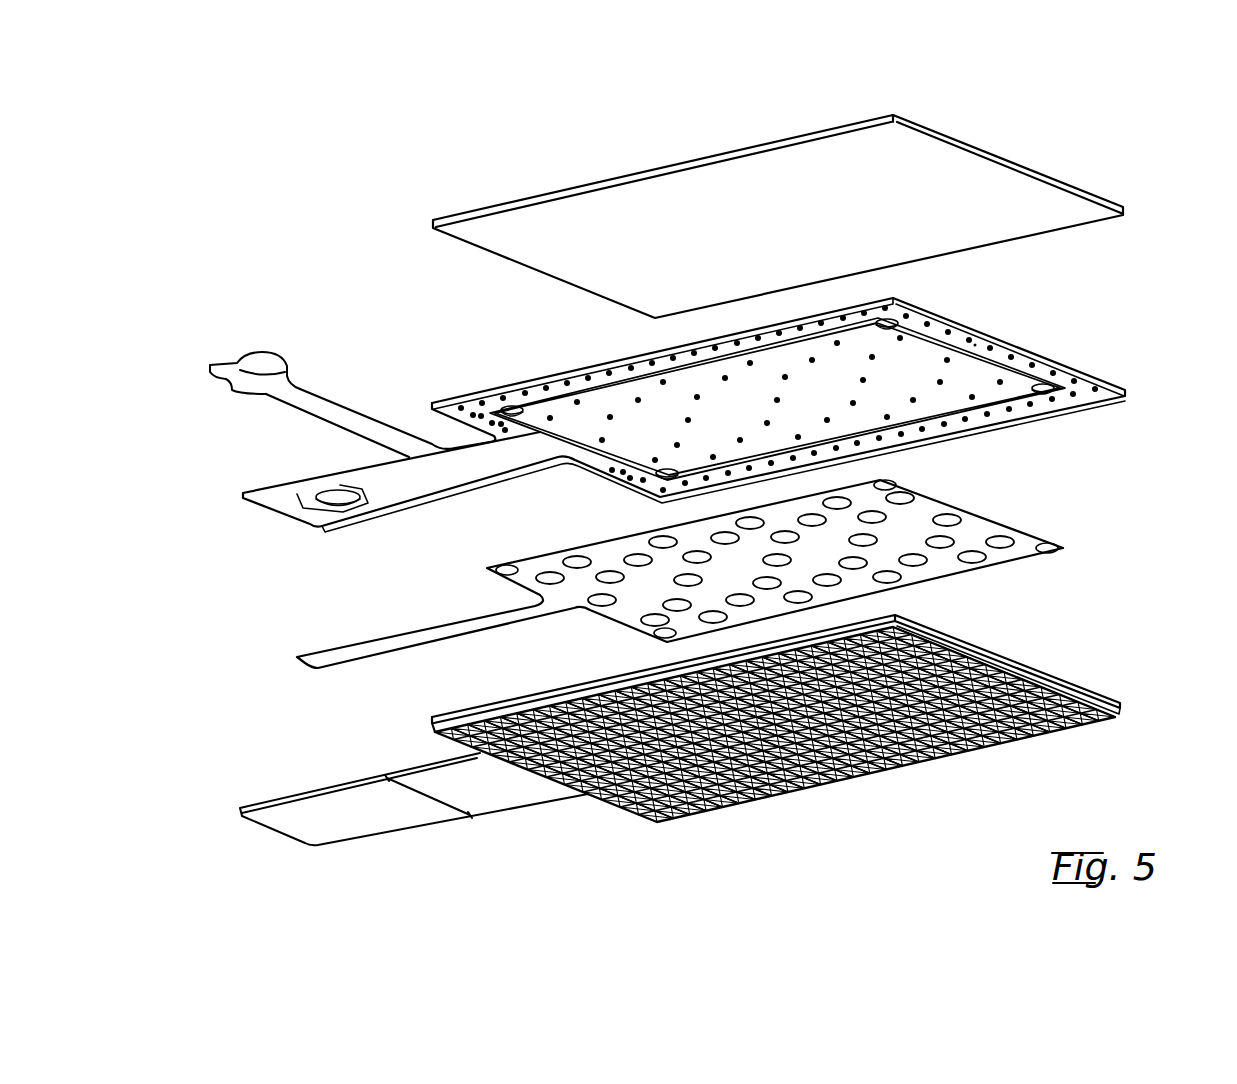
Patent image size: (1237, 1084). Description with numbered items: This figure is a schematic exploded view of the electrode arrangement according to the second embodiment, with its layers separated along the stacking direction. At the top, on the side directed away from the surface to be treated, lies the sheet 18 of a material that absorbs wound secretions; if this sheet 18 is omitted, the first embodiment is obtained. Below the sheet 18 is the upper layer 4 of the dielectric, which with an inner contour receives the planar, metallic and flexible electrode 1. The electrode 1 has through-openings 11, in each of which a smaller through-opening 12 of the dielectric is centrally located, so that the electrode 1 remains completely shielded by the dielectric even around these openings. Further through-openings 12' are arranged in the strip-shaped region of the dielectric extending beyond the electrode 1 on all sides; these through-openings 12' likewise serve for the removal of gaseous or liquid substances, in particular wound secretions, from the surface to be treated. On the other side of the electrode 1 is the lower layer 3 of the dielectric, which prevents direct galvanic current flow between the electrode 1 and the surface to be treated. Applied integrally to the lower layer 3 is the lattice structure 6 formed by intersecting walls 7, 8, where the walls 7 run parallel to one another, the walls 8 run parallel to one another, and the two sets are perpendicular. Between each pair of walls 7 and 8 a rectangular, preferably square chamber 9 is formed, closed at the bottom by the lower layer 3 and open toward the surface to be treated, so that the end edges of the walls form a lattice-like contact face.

The electrode 1 is at (990, 527).
The lower layer 3 is at (1070, 680).
The upper layer 4 is at (1063, 358).
The structure 6 is at (1122, 717).
The walls 7 is at (890, 773).
The walls 8 is at (923, 765).
The chamber 9 is at (1080, 727).
The through-openings 11 is at (950, 520).
The through-opening 12 is at (813, 374).
The through-openings 12' is at (818, 399).
The sheet 18 is at (1067, 219).